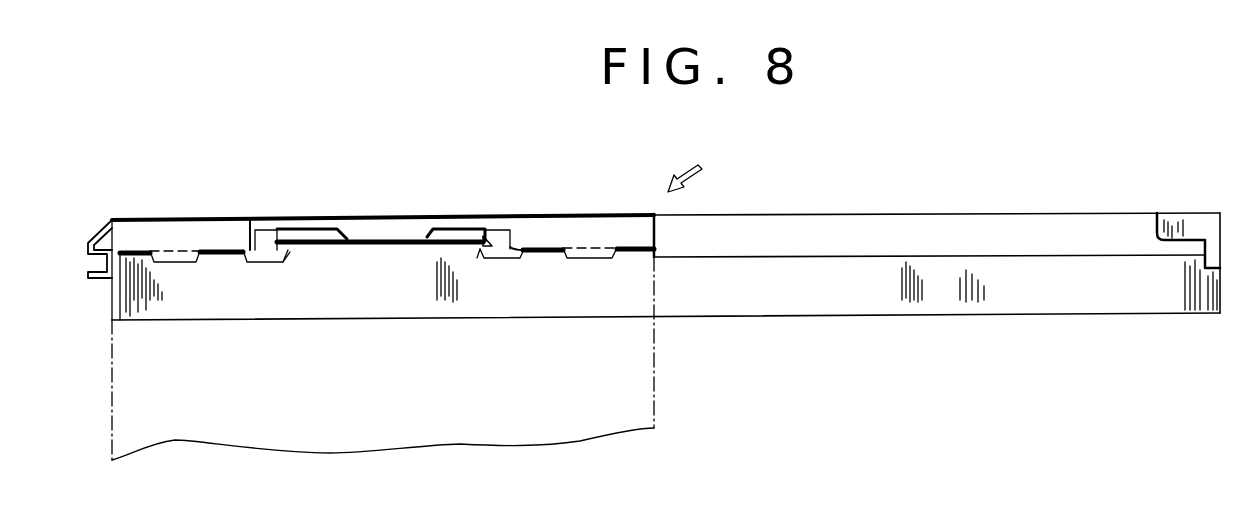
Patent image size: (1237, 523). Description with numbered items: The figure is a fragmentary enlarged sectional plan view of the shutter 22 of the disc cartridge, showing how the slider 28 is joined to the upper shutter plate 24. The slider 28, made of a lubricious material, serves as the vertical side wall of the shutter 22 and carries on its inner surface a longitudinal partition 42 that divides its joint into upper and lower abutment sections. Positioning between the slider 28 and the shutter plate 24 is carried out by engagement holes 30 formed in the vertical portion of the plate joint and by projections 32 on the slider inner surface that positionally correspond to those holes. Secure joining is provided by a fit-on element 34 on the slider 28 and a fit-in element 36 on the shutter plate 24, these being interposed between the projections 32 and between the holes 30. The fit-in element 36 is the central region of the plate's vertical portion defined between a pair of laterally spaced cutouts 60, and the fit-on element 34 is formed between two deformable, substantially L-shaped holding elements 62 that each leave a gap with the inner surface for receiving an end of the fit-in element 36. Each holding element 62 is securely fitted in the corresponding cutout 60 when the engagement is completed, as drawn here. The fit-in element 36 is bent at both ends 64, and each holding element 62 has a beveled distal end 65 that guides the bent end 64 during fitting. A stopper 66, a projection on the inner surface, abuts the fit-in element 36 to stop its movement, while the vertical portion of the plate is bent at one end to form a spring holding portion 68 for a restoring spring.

The shutter 22 is at (699, 168).
The upper shutter plate 24 is at (652, 258).
The slider 28 is at (155, 235).
The engagement hole 30 is at (192, 250).
The projection 32 is at (173, 257).
The fit-on element 34 is at (487, 240).
The fit-in element 36 is at (379, 246).
The partition 42 is at (130, 322).
The cutout 60 is at (250, 222).
The holding element 62 is at (268, 263).
The bent end 64 is at (264, 232).
The beveled end 65 is at (290, 254).
The stopper 66 is at (437, 229).
The spring holding portion 68 is at (88, 248).